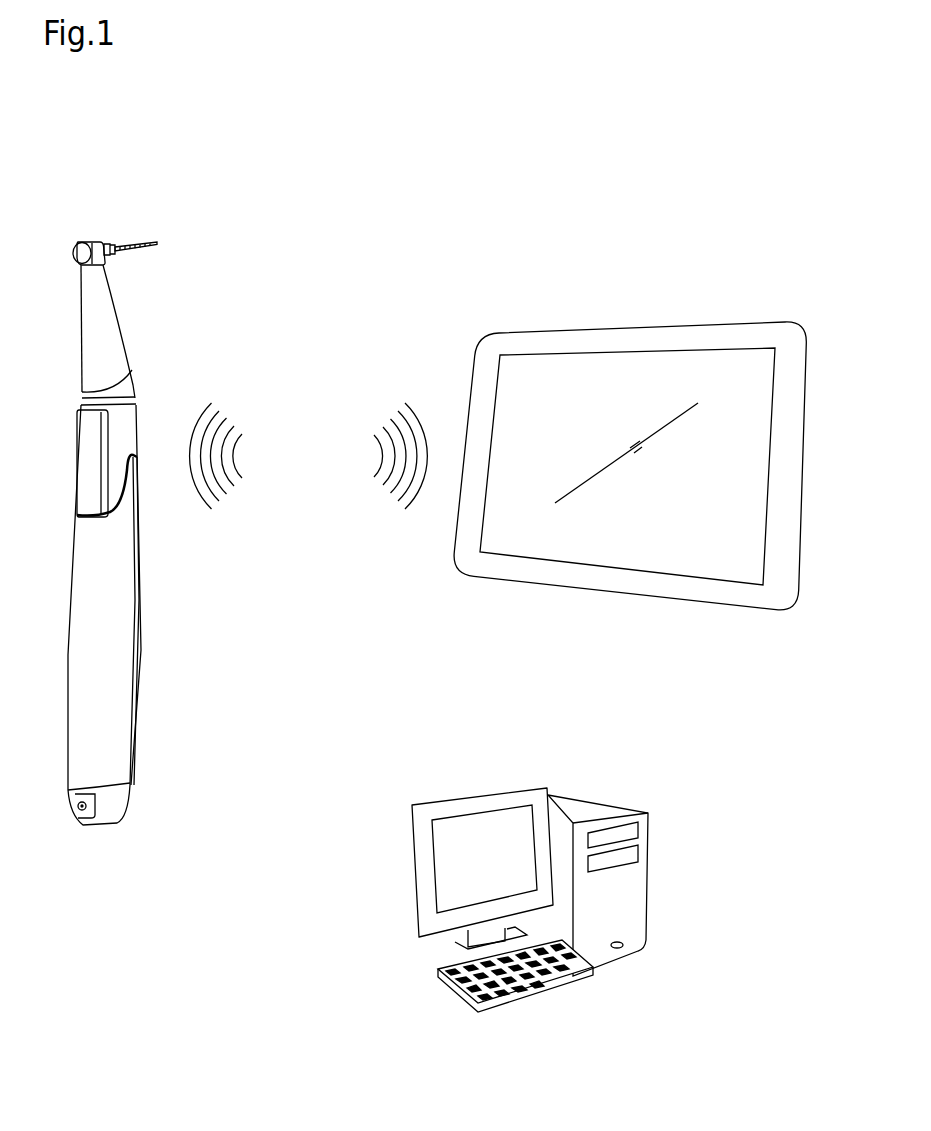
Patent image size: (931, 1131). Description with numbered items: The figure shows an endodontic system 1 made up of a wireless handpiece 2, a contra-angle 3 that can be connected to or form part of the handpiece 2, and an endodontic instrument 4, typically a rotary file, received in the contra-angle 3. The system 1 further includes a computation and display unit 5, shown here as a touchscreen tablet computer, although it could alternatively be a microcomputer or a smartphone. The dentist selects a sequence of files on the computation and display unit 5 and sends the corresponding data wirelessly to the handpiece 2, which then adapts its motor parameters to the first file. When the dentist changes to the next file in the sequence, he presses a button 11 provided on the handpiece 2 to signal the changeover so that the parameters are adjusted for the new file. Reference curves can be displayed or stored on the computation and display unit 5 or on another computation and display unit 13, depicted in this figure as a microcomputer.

The endodontic system 1 is at (439, 151).
The wireless handpiece 2 is at (89, 538).
The contra-angle 3 is at (119, 290).
The endodontic instrument 4 is at (138, 242).
The computation and display unit 5 is at (702, 594).
The button 11 is at (90, 818).
The other computation and display unit 13 is at (530, 1005).